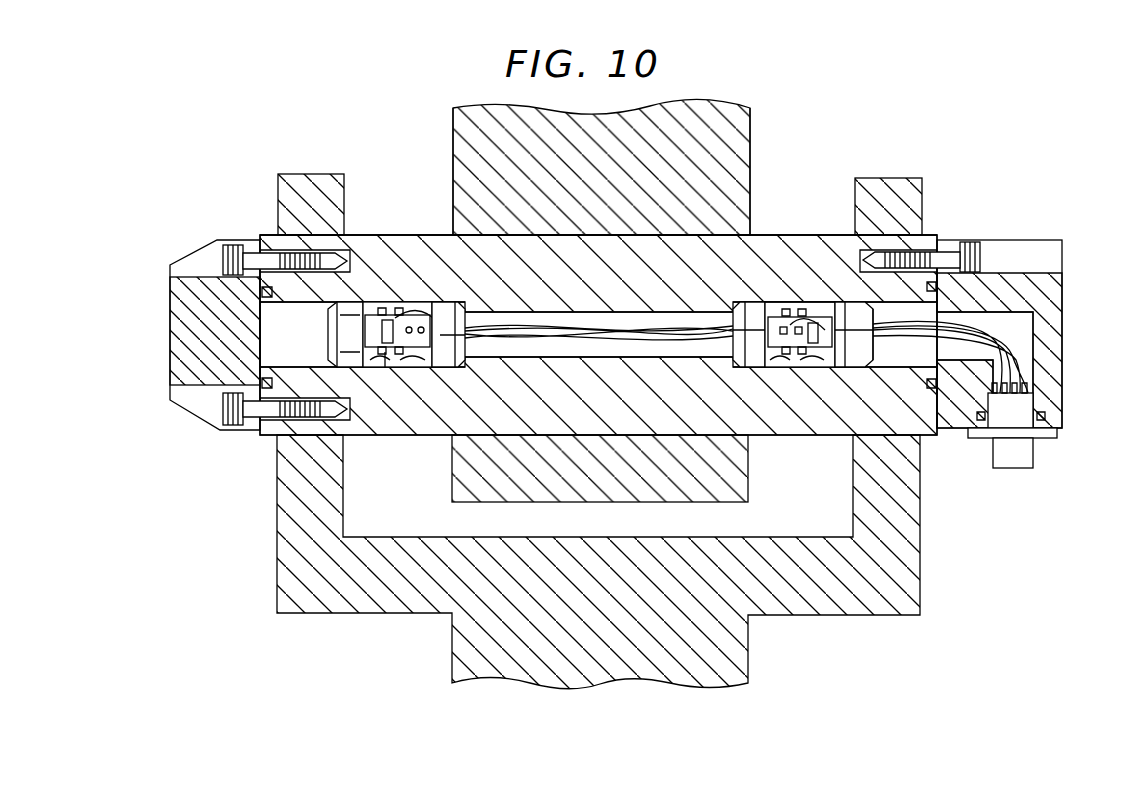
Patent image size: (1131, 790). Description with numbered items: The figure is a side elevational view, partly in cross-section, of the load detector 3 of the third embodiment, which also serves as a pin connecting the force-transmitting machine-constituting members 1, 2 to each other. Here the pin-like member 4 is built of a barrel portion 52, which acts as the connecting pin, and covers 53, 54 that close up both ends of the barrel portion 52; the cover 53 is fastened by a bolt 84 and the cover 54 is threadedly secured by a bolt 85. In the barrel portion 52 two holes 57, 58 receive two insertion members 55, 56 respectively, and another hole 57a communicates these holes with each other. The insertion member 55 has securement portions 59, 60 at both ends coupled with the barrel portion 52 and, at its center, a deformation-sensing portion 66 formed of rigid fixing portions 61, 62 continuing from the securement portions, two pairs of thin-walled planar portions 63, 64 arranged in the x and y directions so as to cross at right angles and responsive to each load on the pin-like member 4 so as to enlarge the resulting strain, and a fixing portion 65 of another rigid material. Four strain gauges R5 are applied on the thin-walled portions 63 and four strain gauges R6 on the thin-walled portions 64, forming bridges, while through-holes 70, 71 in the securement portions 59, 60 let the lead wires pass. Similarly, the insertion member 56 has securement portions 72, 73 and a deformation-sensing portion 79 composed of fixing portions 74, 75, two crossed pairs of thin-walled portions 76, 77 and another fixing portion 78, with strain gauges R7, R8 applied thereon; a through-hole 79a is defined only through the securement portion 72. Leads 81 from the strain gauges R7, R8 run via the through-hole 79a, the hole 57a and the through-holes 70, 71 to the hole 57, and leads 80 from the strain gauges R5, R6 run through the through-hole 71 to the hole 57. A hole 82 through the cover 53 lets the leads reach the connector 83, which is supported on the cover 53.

The force-transmitting member 1 is at (756, 141).
The force-transmitting member 2 is at (830, 616).
The load detector 3 is at (930, 227).
The pin-like member 4 is at (809, 233).
The barrel portion 52 is at (748, 233).
The cover 53 is at (1036, 240).
The cover 54 is at (228, 238).
The insertion member 55 is at (875, 353).
The insertion member 56 is at (326, 346).
The hole 57 is at (933, 387).
The hole 57a is at (641, 343).
The hole 58 is at (265, 325).
The securement portion 59 is at (738, 302).
The securement portion 60 is at (849, 302).
The fixing portion 61 is at (766, 302).
The fixing portion 62 is at (826, 300).
The thin-walled planar portion 63 is at (774, 369).
The thin-walled planar portion 64 is at (846, 367).
The fixing portion 65 is at (807, 369).
The deformation-sensing portion 66 is at (782, 300).
The through-hole 70 is at (737, 366).
The through-hole 71 is at (870, 367).
The securement portion 72 is at (456, 305).
The securement portion 73 is at (351, 301).
The fixing portion 74 is at (426, 301).
The fixing portion 75 is at (368, 301).
The thin-walled portion 76 is at (418, 369).
The thin-walled portion 77 is at (377, 369).
The fixing portion 78 is at (393, 369).
The deformation-sensing portion 79 is at (392, 298).
The through-hole 79a is at (465, 368).
The leads 80 is at (1036, 346).
The leads 81 is at (553, 333).
The hole 82 is at (1031, 320).
The connector 83 is at (1035, 455).
The bolt 84 is at (976, 242).
The bolt 85 is at (222, 251).
The strain gauges R5 is at (795, 368).
The strain gauges R6 is at (803, 308).
The strain gauges R7 is at (440, 305).
The strain gauges R8 is at (399, 307).